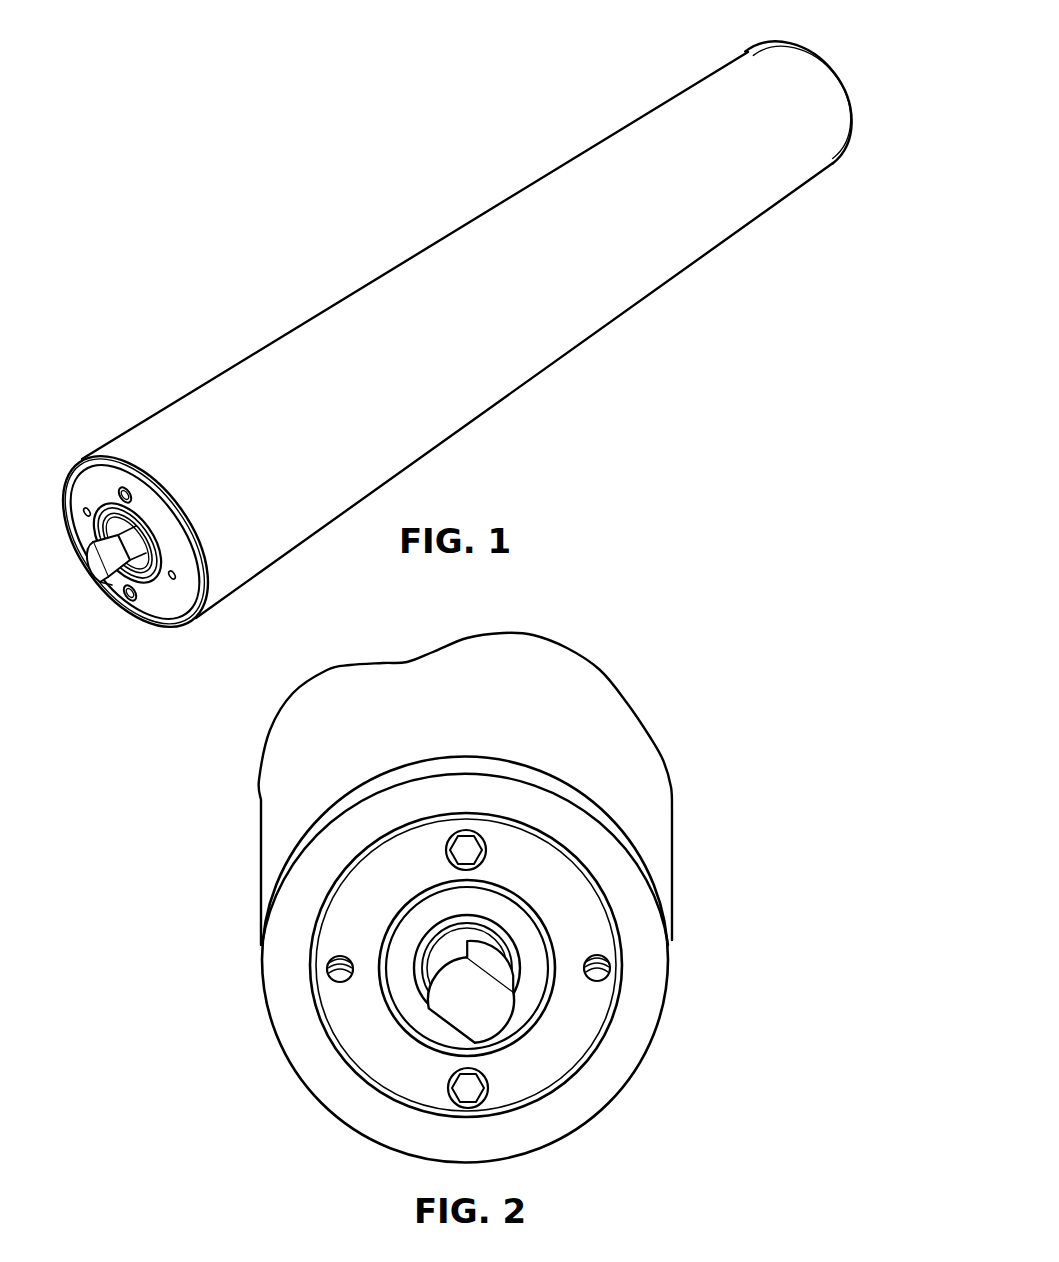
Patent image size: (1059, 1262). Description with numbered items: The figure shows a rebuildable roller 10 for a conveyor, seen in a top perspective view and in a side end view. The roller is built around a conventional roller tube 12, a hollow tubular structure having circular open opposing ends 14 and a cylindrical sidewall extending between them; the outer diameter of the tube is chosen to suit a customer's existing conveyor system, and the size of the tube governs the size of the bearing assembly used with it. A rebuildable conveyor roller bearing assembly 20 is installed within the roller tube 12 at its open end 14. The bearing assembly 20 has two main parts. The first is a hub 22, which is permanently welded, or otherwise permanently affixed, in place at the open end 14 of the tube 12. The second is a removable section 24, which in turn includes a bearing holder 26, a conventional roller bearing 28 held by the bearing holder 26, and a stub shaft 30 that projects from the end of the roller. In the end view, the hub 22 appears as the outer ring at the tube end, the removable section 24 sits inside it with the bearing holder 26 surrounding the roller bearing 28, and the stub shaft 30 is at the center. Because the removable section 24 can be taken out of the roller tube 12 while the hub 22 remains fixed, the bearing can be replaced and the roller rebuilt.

In FIG. 1, the rebuildable roller 10 is at (409, 206).
In FIG. 2, the rebuildable roller 10 is at (667, 709).
In FIG. 1, the roller tube 12 is at (607, 292).
In FIG. 2, the roller tube 12 is at (282, 813).
In FIG. 1, the open ends 14 is at (838, 84).
In FIG. 2, the open ends 14 is at (642, 890).
In FIG. 1, the rebuildable conveyor roller bearing assembly 20 is at (192, 556).
In FIG. 2, the rebuildable conveyor roller bearing assembly 20 is at (461, 1008).
In FIG. 1, the hub 22 is at (177, 527).
In FIG. 2, the hub 22 is at (352, 1088).
In FIG. 1, the removable section 24 is at (70, 497).
In FIG. 2, the removable section 24 is at (373, 925).
In FIG. 1, the bearing holder 26 is at (173, 555).
In FIG. 2, the bearing holder 26 is at (569, 1055).
In FIG. 1, the roller bearing 28 is at (150, 577).
In FIG. 2, the roller bearing 28 is at (417, 1013).
In FIG. 1, the stub shaft 30 is at (95, 562).
In FIG. 2, the stub shaft 30 is at (480, 1007).